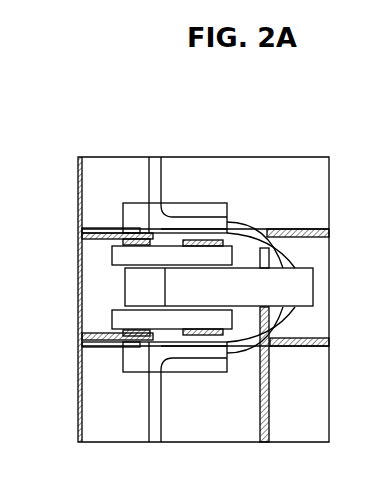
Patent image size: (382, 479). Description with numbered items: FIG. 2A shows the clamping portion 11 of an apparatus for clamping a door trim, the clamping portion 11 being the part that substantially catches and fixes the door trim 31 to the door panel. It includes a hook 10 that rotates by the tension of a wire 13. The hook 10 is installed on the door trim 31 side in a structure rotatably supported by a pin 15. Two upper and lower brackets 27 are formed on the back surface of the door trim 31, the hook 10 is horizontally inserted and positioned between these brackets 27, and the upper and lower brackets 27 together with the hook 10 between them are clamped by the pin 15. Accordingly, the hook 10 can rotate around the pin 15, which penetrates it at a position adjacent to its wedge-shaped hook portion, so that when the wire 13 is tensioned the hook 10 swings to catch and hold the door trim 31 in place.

The hook 10 is at (303, 268).
The clamping portion 11 is at (291, 232).
The wire 13 is at (255, 228).
The pin 15 is at (186, 208).
The brackets 27 is at (118, 256).
The door trim 31 is at (96, 292).